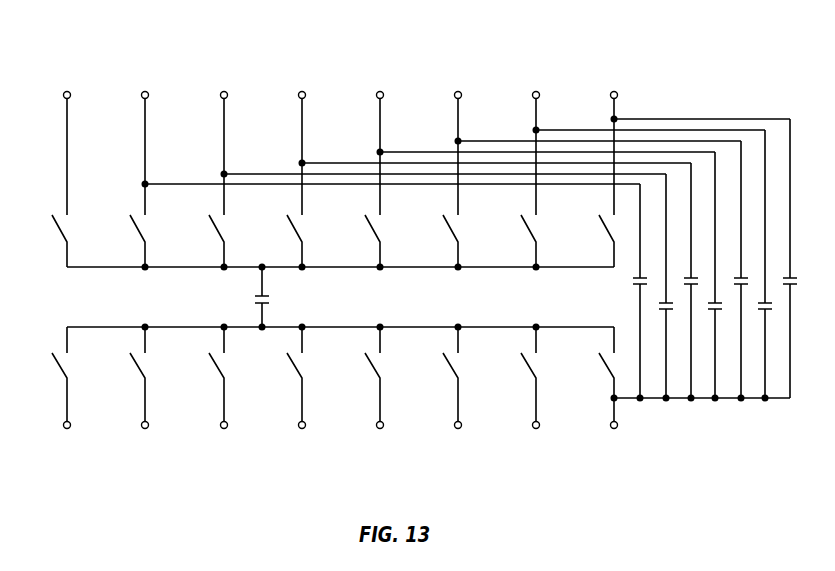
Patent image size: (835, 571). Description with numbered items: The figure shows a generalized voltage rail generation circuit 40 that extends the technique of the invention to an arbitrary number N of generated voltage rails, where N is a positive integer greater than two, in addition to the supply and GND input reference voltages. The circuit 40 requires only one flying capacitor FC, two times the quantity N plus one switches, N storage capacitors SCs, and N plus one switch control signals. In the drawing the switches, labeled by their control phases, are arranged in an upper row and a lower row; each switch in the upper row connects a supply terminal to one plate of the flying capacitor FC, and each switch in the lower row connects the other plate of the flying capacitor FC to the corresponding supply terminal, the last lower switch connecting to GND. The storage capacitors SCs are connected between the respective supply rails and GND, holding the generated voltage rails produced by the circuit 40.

The circuit 40 is at (407, 262).
The flying capacitor FC is at (274, 297).
The storage capacitors SCs is at (610, 301).
The GND input reference voltage GND is at (614, 437).